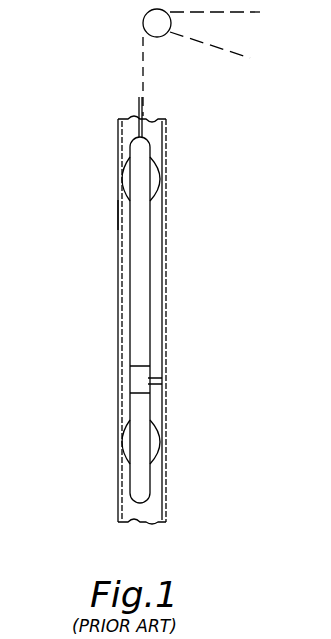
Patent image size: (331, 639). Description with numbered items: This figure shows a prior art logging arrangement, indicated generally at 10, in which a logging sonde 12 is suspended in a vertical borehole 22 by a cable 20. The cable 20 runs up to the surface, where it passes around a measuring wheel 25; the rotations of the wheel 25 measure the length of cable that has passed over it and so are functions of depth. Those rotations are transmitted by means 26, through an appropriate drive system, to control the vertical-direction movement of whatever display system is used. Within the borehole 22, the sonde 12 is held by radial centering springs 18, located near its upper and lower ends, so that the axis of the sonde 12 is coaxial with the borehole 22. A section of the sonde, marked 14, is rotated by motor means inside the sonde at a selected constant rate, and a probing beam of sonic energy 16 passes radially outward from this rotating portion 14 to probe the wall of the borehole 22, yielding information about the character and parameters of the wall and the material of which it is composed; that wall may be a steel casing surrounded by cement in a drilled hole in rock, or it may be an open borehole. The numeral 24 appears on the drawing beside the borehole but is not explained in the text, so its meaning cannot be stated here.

The logging arrangement 10 is at (168, 160).
The logging sonde 12 is at (145, 253).
The rotating section of the sonde 14 is at (141, 373).
The probing beam of sonic energy 16 is at (156, 384).
The radial centering springs 18 is at (155, 178).
The cable 20 is at (139, 103).
The borehole 22 is at (117, 213).
The tube interior space 24 is at (62, 302).
The measuring wheel 25 is at (143, 21).
The transmission means 26 is at (190, 38).